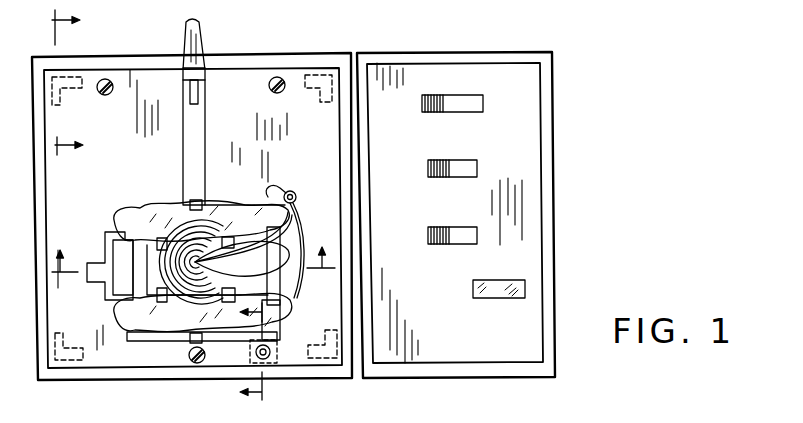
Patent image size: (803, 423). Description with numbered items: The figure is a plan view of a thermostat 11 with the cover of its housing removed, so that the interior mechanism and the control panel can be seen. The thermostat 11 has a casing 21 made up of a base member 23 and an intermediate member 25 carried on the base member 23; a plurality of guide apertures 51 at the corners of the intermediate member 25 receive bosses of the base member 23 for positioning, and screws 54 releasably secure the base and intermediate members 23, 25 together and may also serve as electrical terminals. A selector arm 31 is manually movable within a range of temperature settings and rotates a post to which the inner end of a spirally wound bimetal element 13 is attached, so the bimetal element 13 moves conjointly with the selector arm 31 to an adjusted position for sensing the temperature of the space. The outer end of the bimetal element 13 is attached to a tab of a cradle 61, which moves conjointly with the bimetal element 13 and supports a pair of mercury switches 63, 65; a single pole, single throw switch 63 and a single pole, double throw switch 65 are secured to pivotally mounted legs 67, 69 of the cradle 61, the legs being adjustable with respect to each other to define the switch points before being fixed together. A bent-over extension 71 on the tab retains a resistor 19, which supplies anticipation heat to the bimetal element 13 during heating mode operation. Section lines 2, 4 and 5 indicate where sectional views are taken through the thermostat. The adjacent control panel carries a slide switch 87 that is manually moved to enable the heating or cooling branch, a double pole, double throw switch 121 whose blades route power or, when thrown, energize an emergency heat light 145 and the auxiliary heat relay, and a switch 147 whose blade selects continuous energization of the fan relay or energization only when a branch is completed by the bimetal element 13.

The section line 2- 2 is at (193, 250).
The section line 4- 4 is at (75, 83).
The section line 5- 5 is at (242, 353).
The thermostat 11 is at (562, 105).
The bimetal element 13 is at (184, 282).
The resistor 19 is at (272, 195).
The casing 21 is at (562, 272).
The base member 23 is at (96, 375).
The intermediate member 25 is at (102, 352).
The selector arm 31 is at (203, 115).
The guide apertures 51 is at (70, 88).
The screws 54 is at (105, 78).
The cradle 61 is at (282, 327).
The switch 63 is at (156, 328).
The switch 65 is at (150, 206).
The leg 67 is at (135, 282).
The leg 69 is at (107, 238).
The bent-over extension 71 is at (297, 200).
The slide switch 87 is at (437, 113).
The double pole, double throw switch 121 is at (442, 245).
The emergency heat light 145 is at (478, 286).
The switch 147 is at (437, 178).